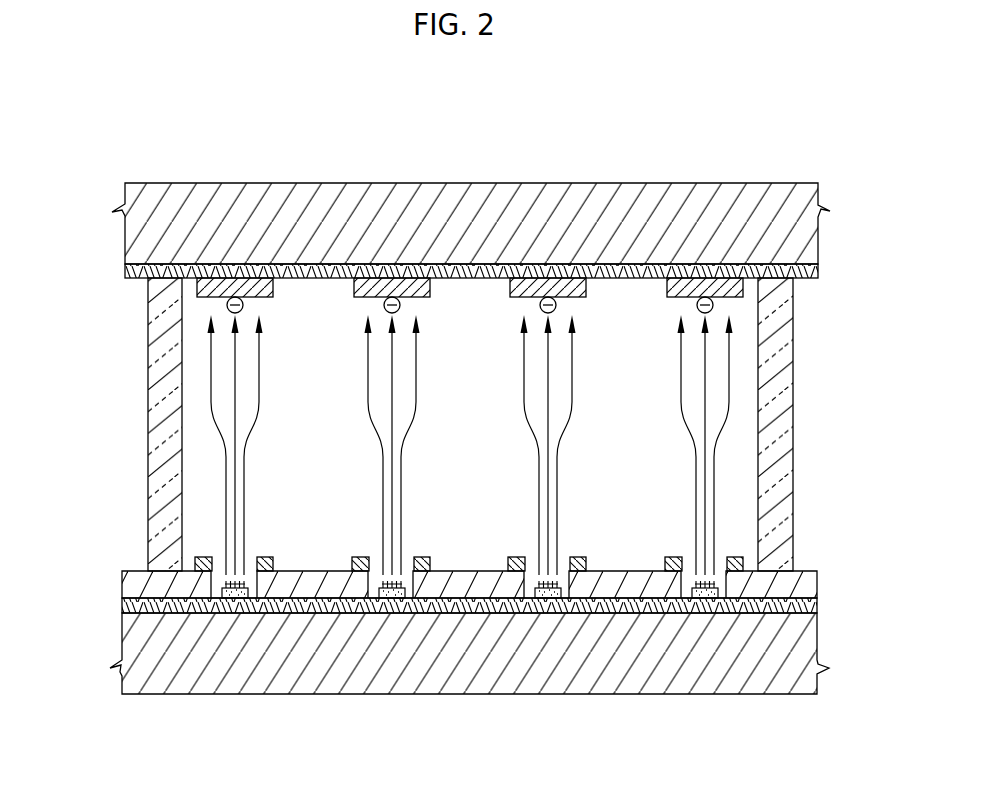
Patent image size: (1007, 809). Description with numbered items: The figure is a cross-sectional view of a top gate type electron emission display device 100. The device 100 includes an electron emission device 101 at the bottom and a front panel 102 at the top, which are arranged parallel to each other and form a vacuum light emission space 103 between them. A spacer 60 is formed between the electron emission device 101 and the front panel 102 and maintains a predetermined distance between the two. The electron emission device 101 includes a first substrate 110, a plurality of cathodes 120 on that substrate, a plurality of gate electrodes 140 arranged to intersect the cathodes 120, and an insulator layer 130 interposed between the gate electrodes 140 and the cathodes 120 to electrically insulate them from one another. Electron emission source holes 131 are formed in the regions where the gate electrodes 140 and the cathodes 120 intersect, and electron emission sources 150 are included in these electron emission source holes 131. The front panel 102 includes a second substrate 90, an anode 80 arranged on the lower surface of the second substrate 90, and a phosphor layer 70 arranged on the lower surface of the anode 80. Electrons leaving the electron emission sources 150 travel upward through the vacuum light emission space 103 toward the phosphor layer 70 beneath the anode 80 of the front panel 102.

The top gate type electron emission display device 100 is at (72, 222).
The electron emission device 101 is at (130, 558).
The front panel 102 is at (131, 294).
The vacuum light emission space 103 is at (325, 489).
The spacer 60 is at (780, 482).
The phosphor layer 70 is at (737, 285).
The anode 80 is at (807, 271).
The second substrate 90 is at (807, 248).
The first substrate 110 is at (807, 642).
The cathodes 120 is at (807, 605).
The insulator layer 130 is at (807, 587).
The electron emission source holes 131 is at (528, 584).
The gate electrodes 140 is at (669, 562).
The electron emission sources 150 is at (547, 610).